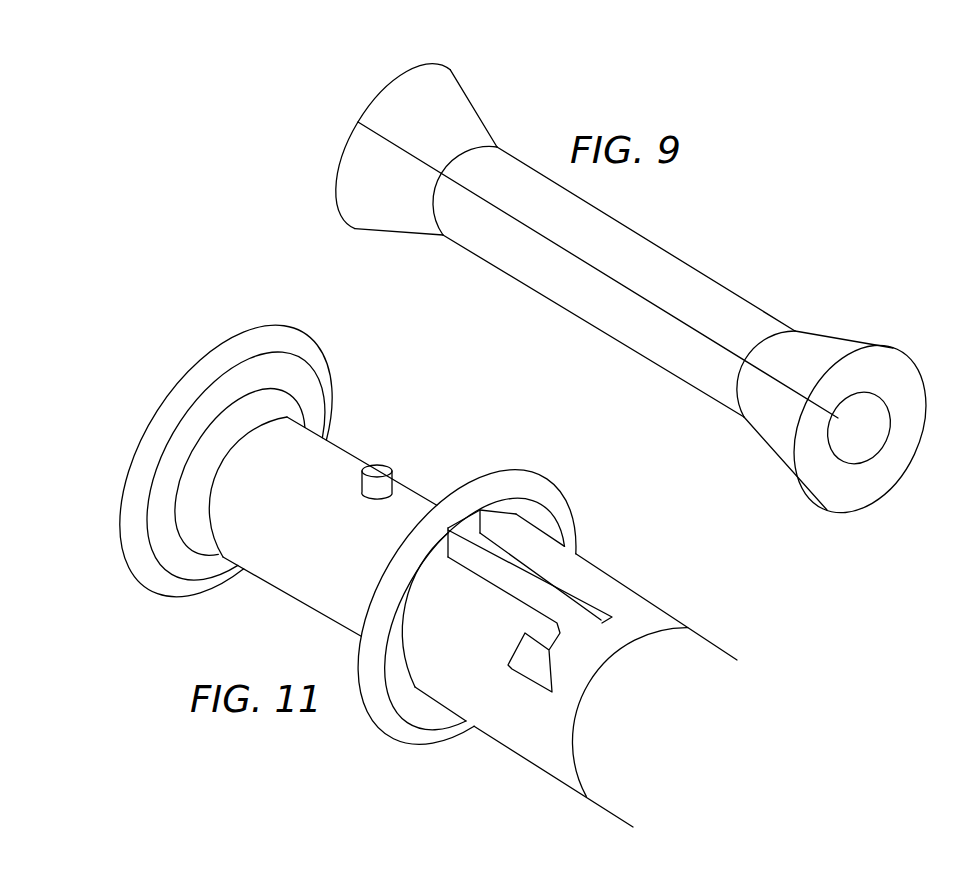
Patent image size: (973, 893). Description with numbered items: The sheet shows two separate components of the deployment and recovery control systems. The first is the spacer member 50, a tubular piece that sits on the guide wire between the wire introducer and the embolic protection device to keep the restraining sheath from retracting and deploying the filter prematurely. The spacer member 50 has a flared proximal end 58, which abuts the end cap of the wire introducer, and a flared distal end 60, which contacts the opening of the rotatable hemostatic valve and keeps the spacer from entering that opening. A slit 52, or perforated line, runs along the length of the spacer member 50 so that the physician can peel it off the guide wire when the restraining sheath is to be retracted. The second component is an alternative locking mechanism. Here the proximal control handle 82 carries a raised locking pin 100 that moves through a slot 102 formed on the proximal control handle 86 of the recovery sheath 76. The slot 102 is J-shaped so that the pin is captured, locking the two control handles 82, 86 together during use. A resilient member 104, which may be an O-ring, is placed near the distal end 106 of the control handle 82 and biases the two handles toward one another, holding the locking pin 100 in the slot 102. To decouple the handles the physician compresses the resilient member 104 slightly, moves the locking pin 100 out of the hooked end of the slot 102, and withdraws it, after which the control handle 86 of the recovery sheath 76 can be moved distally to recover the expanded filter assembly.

In FIG. 9, the spacer member 50 is at (703, 268).
In FIG. 9, the slit 52 is at (587, 265).
In FIG. 9, the flared proximal end 58 is at (440, 110).
In FIG. 9, the flared distal end 60 is at (822, 355).
In FIG. 11, the recovery sheath 76 is at (693, 663).
In FIG. 11, the proximal control handle 82 is at (335, 465).
In FIG. 11, the proximal control handle of the recovery sheath 86 is at (647, 620).
In FIG. 11, the raised locking pin 100 is at (380, 472).
In FIG. 11, the slot 102 is at (566, 598).
In FIG. 11, the resilient member 104 is at (203, 542).
In FIG. 11, the distal end 106 is at (283, 345).